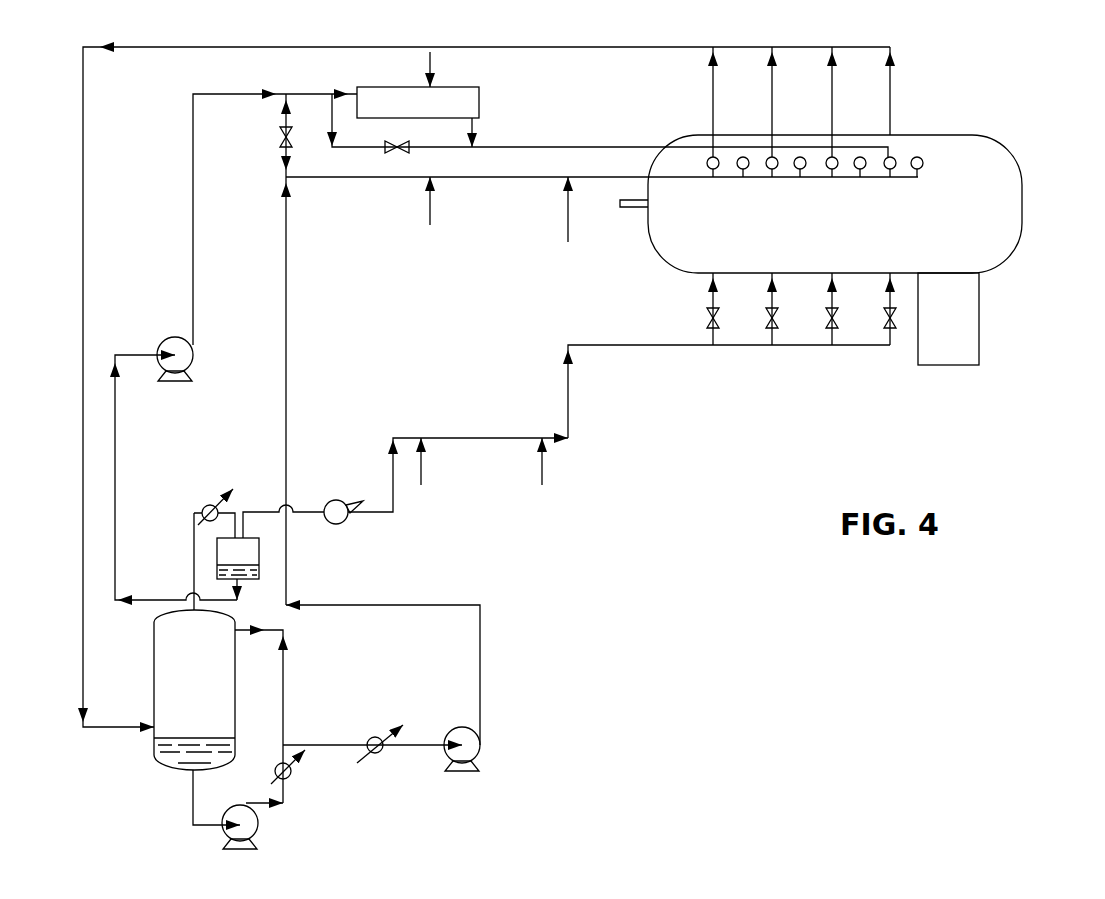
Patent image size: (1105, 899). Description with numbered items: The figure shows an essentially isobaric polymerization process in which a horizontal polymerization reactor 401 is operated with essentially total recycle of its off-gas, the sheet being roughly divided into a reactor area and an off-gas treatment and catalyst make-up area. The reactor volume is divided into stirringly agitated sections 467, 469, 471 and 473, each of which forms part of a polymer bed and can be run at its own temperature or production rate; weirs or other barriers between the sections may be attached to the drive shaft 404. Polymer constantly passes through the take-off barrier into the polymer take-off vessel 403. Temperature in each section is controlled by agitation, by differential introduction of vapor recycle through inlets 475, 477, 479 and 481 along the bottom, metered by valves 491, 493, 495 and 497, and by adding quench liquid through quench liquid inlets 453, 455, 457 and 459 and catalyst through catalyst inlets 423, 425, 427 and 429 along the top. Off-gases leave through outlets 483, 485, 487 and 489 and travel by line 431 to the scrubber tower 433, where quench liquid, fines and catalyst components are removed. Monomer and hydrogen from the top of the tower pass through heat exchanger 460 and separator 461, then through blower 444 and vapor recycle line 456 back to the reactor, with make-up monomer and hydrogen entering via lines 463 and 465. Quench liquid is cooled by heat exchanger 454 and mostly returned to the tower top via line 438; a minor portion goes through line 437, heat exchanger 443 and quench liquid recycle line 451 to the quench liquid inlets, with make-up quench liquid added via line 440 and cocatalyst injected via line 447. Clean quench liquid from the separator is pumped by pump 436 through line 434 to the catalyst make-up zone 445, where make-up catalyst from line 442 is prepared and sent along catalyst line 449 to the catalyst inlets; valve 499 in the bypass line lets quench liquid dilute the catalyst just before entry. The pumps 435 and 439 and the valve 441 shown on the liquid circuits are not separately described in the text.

The horizontal polymerization reactor 401 is at (1022, 200).
The polymer take-off vessel 403 is at (979, 300).
The drive shaft 404 is at (630, 207).
The catalyst inlet 423 is at (705, 158).
The catalyst inlet 425 is at (770, 157).
The catalyst inlet 427 is at (830, 157).
The catalyst inlet 429 is at (893, 158).
The line 431 is at (547, 47).
The scrubber tower 433 is at (154, 672).
The line 434 is at (115, 428).
The pump 435 is at (258, 826).
The pump 436 is at (189, 343).
The line 437 is at (338, 745).
The line 438 is at (283, 673).
The pump 439 is at (480, 734).
The line 440 is at (430, 210).
The valve 441 is at (280, 140).
The line 442 is at (430, 60).
The heat exchanger 443 is at (377, 735).
The blower 444 is at (340, 524).
The catalyst make-up zone 445 is at (479, 97).
The line 447 is at (568, 228).
The catalyst line 449 is at (588, 147).
The quench liquid recycle line 451 is at (390, 177).
The quench liquid inlet 453 is at (741, 170).
The heat exchanger 454 is at (291, 776).
The quench liquid inlet 455 is at (800, 170).
The vapor recycle line 456 is at (655, 348).
The quench liquid inlet 457 is at (860, 170).
The quench liquid inlet 459 is at (897, 180).
The heat exchanger 460 is at (205, 505).
The separator 461 is at (259, 556).
The line 463 is at (421, 485).
The line 465 is at (542, 480).
The stirringly agitated section 467 is at (731, 259).
The stirringly agitated section 469 is at (805, 259).
The stirringly agitated section 471 is at (862, 259).
The stirringly agitated section 473 is at (921, 259).
The vapor recycle inlet 475 is at (708, 300).
The vapor recycle inlet 477 is at (768, 296).
The vapor recycle inlet 479 is at (828, 296).
The vapor recycle inlet 481 is at (886, 296).
The off-gas outlet 483 is at (889, 135).
The off-gas outlet 485 is at (831, 145).
The off-gas outlet 487 is at (771, 145).
The off-gas outlet 489 is at (708, 145).
The valve 491 is at (706, 318).
The valve 493 is at (766, 322).
The valve 495 is at (826, 322).
The valve 497 is at (896, 322).
The valve 499 is at (400, 152).